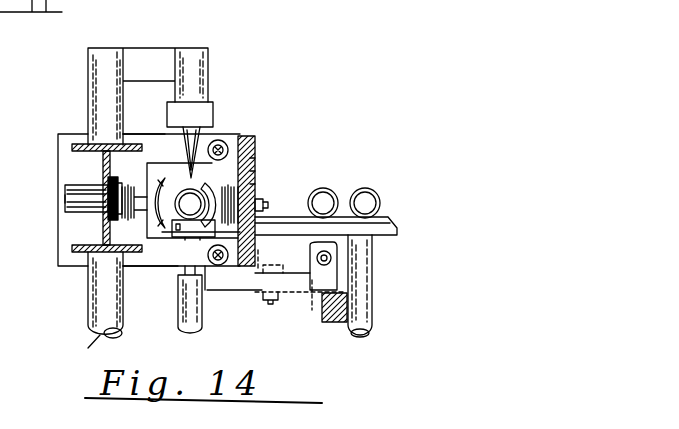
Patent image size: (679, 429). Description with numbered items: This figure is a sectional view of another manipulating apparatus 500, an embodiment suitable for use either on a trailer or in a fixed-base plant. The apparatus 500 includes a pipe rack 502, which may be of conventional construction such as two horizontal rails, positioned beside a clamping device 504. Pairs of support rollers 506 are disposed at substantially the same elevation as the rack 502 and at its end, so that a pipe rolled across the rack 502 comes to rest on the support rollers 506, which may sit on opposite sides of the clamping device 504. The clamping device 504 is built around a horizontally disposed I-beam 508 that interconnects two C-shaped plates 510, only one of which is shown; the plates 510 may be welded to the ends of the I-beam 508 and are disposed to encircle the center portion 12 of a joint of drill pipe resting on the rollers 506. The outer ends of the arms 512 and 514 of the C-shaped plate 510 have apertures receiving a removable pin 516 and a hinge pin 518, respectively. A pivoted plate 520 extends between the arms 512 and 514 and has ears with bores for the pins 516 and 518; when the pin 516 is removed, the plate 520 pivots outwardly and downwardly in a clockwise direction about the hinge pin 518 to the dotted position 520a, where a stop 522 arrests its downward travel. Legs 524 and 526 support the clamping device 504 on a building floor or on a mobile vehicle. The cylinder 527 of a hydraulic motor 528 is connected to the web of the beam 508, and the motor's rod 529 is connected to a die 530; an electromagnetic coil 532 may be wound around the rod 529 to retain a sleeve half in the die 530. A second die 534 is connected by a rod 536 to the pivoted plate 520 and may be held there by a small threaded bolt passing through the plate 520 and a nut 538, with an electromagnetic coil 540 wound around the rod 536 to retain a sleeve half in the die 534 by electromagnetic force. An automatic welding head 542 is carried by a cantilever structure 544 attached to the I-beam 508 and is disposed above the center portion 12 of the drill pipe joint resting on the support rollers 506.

The manipulating apparatus 500 is at (268, 87).
The pipe rack 502 is at (384, 218).
The clamping device 504 is at (262, 140).
The support rollers 506 is at (168, 232).
The I-beam 508 is at (72, 149).
The C-shaped plate 510 is at (70, 222).
The arm 512 is at (160, 133).
The arm 514 is at (178, 262).
The removable pin 516 is at (224, 143).
The hinge pin 518 is at (218, 266).
The pivoted plate 520 is at (256, 173).
The pivoted plate position 520a is at (310, 295).
The stop 522 is at (328, 316).
The leg 524 is at (98, 302).
The leg 526 is at (200, 326).
The cylinder 527 is at (80, 192).
The hydraulic motor 528 is at (63, 197).
The rod 529 is at (122, 186).
The die 530 is at (172, 158).
The electromagnetic coil 532 is at (131, 216).
The second die 534 is at (200, 190).
The rod 536 is at (256, 186).
The nut 538 is at (264, 205).
The electromagnetic coil 540 is at (256, 160).
The automatic welding head 542 is at (204, 122).
The cantilever structure 544 is at (145, 58).
The center portion 12 is at (186, 204).